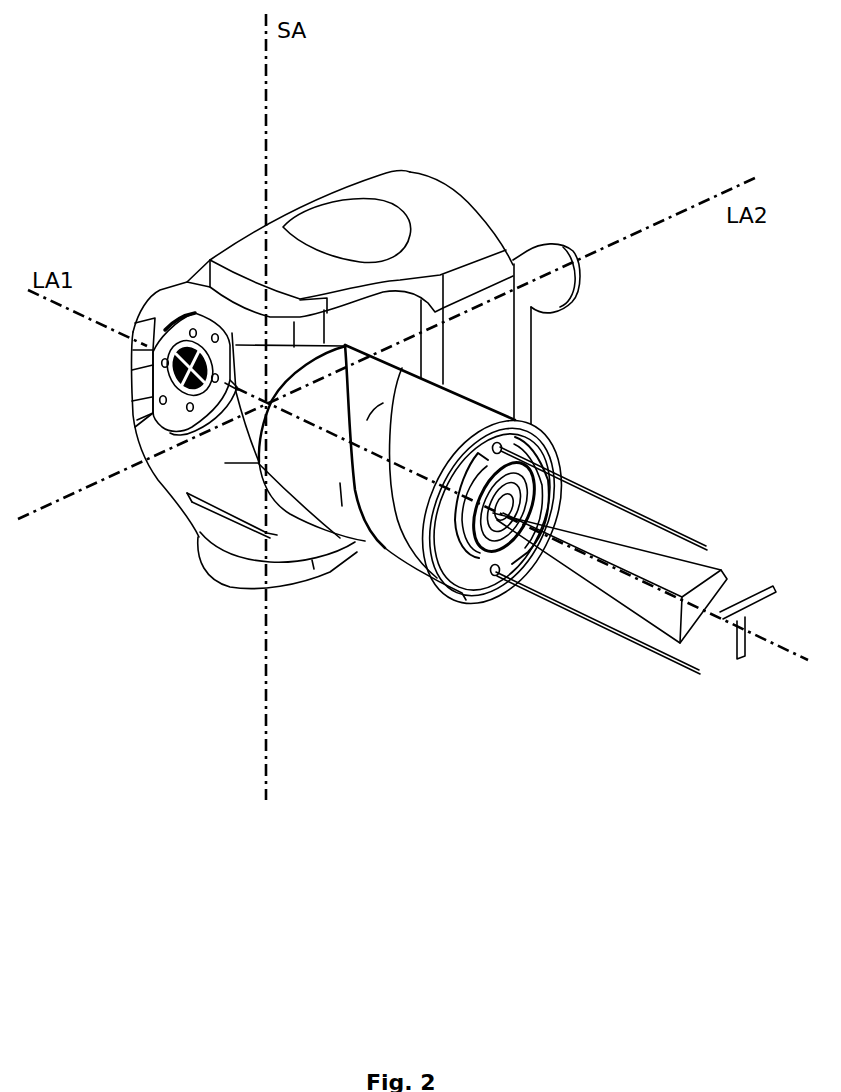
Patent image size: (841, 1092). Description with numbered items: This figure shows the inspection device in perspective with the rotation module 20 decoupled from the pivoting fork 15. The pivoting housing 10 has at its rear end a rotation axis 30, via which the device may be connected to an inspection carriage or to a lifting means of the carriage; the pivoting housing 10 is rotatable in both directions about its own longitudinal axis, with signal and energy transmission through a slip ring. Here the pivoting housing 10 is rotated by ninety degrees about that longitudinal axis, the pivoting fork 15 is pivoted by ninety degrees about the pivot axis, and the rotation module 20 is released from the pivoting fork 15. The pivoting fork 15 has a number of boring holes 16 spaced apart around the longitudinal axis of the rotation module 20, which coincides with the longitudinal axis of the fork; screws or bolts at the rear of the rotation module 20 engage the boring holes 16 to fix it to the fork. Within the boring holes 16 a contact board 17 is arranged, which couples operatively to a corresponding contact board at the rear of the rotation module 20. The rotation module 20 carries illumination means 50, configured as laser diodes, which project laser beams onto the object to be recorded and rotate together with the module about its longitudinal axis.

The pivoting housing 10 is at (403, 177).
The pivoting fork 15 is at (157, 287).
The boring holes 16 is at (161, 405).
The contact board 17 is at (185, 390).
The rotation module 20 is at (473, 383).
The rotation axis 30 is at (573, 240).
The illumination means 50 is at (492, 574).